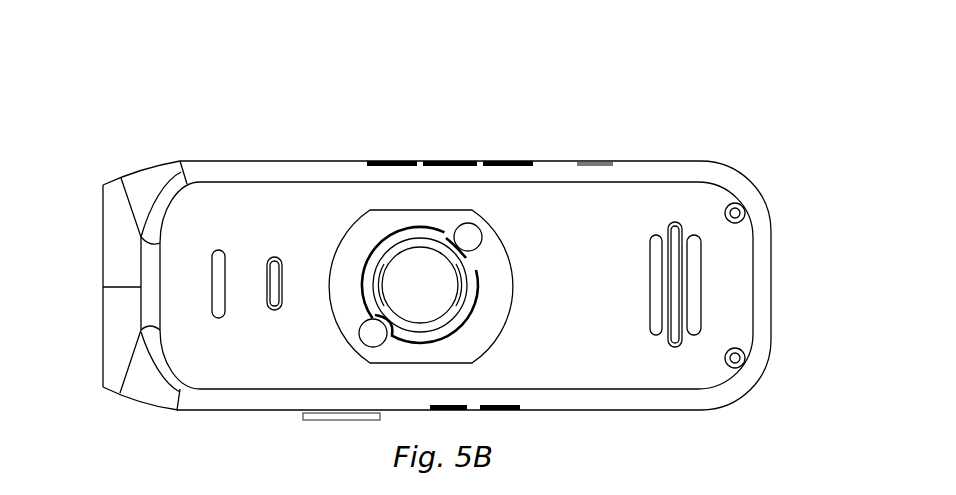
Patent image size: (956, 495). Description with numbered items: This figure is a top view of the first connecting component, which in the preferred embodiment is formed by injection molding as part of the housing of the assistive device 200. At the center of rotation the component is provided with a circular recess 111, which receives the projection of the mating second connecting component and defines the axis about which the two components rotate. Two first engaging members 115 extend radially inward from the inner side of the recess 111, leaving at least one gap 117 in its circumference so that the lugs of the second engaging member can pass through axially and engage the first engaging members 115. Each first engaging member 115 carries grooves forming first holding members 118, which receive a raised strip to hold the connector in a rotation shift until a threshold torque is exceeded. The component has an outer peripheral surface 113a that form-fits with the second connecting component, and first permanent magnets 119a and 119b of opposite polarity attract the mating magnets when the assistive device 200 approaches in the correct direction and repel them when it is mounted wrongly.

The assistive device 200 is at (542, 117).
The recess 111 is at (378, 240).
The outer peripheral surface 113a is at (512, 313).
The first engaging member 115 is at (478, 282).
The gap 117 is at (448, 320).
The first holding member 118 is at (466, 240).
The first permanent magnet 119a is at (373, 333).
The first permanent magnet 119b is at (478, 224).